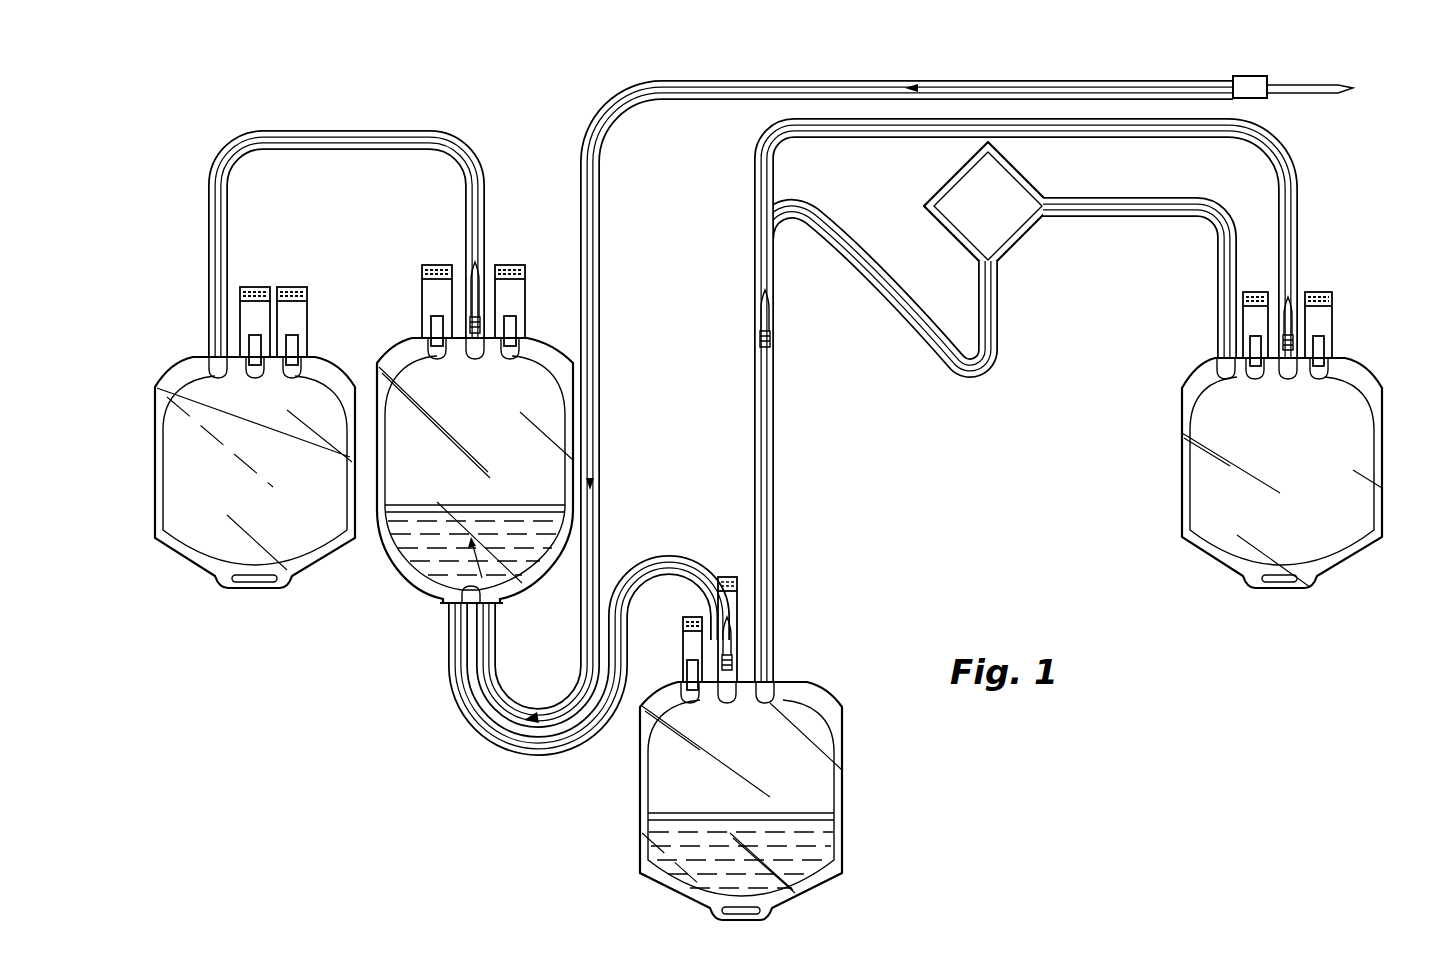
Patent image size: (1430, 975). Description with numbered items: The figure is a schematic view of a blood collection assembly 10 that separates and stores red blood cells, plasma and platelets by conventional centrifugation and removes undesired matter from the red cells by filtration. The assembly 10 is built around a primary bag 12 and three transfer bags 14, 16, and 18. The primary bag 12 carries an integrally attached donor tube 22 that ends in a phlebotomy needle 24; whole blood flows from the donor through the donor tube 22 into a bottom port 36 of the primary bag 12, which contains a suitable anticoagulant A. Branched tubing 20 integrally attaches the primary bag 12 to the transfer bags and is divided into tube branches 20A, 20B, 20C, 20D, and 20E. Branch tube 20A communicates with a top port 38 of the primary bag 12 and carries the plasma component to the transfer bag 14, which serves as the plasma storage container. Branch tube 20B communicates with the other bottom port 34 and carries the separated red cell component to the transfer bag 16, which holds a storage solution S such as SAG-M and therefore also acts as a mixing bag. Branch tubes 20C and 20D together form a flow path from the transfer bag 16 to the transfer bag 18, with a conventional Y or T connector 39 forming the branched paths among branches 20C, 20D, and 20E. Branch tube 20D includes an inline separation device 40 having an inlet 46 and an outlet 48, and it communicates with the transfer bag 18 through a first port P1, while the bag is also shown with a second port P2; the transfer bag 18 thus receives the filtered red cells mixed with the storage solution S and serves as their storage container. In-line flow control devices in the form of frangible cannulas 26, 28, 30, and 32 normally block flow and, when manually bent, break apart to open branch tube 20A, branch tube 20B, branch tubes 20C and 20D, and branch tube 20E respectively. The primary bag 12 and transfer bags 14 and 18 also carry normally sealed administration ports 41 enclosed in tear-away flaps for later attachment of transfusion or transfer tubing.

The blood collection assembly 10 is at (779, 476).
The primary bag 12 is at (410, 385).
The transfer bag 14 is at (200, 523).
The transfer bag 16 is at (665, 768).
The transfer bag 18 is at (1332, 442).
The branched tubing 20 is at (745, 273).
The tube branch 20A is at (357, 130).
The tube branch 20B is at (553, 755).
The tube branch 20C is at (775, 434).
The tube branch 20D is at (999, 340).
The tube branch 20E is at (1296, 152).
The donor tube 22 is at (865, 79).
The phlebotomy needle 24 is at (1308, 82).
The frangible cannula 26 is at (479, 293).
The frangible cannula 28 is at (726, 650).
The frangible cannula 30 is at (757, 338).
The frangible cannula 32 is at (1289, 342).
The bottom port 34 is at (491, 611).
The bottom port 36 is at (448, 612).
The top port 38 is at (474, 350).
The Y or T connector 39 is at (773, 218).
The inline separation device 40 is at (1008, 218).
The administration ports 41 is at (294, 280).
The inlet 46 is at (983, 272).
The outlet 48 is at (1054, 198).
The anticoagulant A is at (428, 555).
The storage solution S is at (673, 853).
The first port P1 is at (1232, 379).
The second inlet P2 is at (1285, 379).